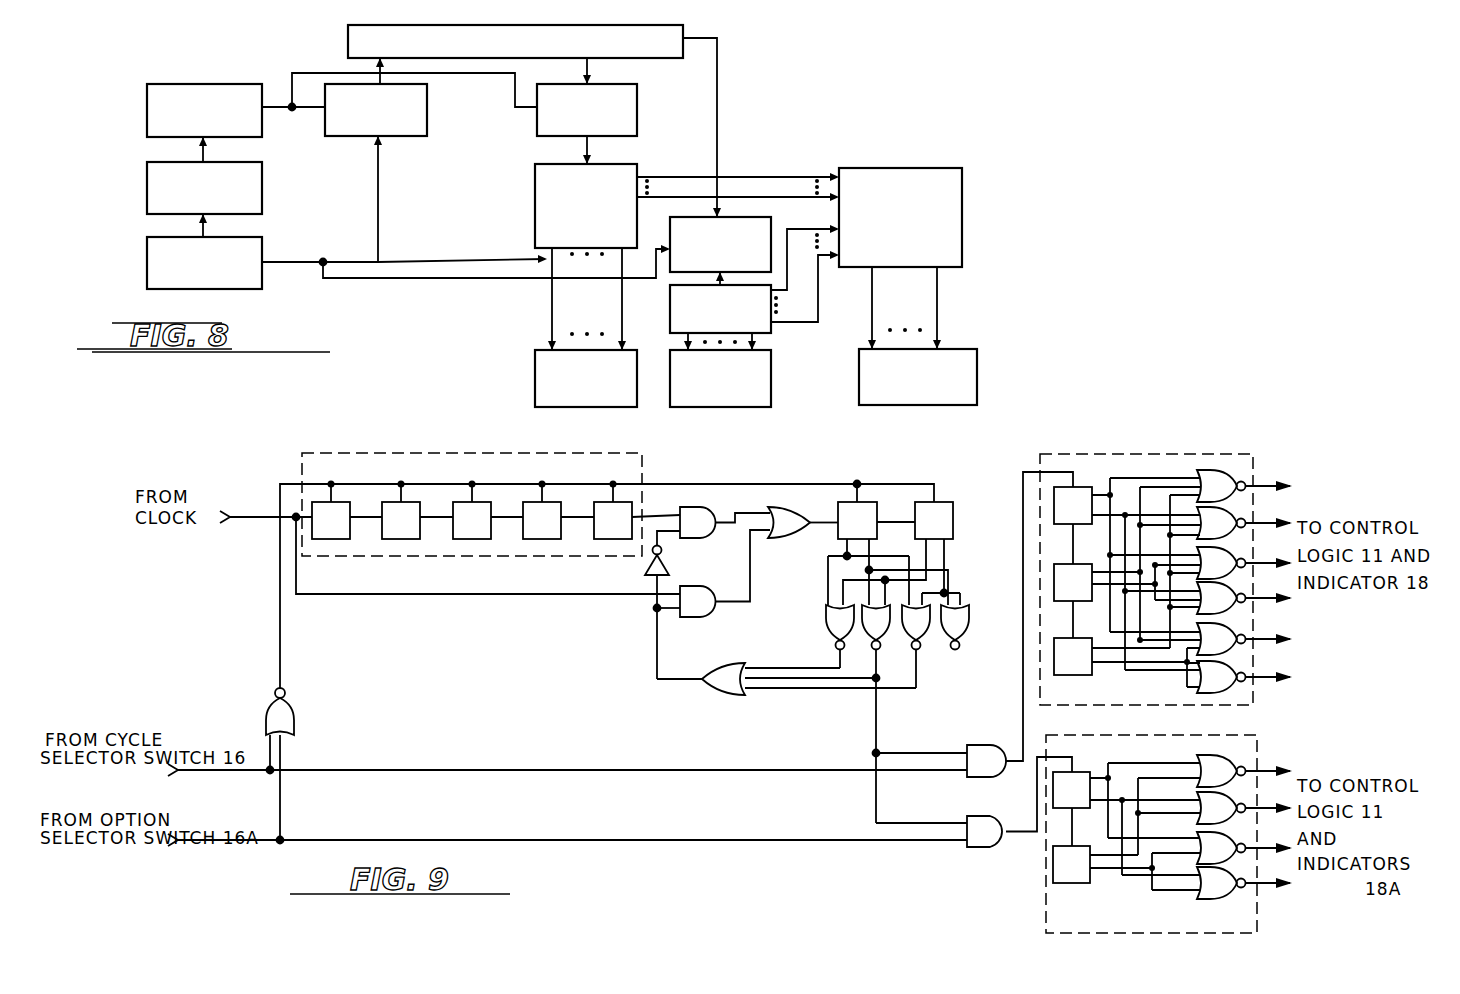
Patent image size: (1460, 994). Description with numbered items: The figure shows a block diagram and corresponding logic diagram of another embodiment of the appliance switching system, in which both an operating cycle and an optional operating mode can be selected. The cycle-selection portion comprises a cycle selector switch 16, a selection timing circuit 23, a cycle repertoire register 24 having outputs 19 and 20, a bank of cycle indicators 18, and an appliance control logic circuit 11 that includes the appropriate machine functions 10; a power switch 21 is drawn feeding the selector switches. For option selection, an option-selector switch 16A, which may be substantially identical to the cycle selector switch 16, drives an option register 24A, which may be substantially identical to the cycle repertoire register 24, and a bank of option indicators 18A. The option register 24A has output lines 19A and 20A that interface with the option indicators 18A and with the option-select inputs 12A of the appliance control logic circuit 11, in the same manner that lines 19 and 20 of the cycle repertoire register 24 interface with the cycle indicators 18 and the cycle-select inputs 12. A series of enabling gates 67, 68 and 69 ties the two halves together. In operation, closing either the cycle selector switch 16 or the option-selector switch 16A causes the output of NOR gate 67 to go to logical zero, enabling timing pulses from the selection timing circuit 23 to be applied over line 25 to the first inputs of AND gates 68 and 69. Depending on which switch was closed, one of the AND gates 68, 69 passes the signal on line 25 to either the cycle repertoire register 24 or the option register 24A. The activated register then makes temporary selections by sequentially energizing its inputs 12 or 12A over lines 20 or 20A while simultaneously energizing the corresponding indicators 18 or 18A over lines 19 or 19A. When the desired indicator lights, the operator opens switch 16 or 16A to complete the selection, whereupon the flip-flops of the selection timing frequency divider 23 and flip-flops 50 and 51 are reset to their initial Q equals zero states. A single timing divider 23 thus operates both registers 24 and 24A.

In FIG. 8, the machine functions 10 is at (925, 405).
In FIG. 8, the appliance control logic circuit 11 is at (910, 168).
In FIG. 8, the cycle-select inputs 12 is at (842, 185).
In FIG. 8, the option-select inputs 12A is at (826, 258).
In FIG. 8, the cycle selector switch 16 is at (170, 83).
In FIG. 8, the option-selector switch 16A is at (147, 267).
In FIG. 8, the cycle indicators 18 is at (535, 378).
In FIG. 8, the option indicators 18A is at (733, 407).
In FIG. 8, the cycle repertoire register output lines 19 is at (535, 260).
In FIG. 8, the option register output lines 19A is at (683, 340).
In FIG. 8, the cycle repertoire register output lines 20 is at (688, 186).
In FIG. 8, the option register output lines 20A is at (799, 305).
In FIG. 8, the power switch 21 is at (147, 186).
In FIG. 8, the selection timing circuit 23 is at (683, 38).
In FIG. 9, the selection timing circuit 23 is at (490, 451).
In FIG. 8, the cycle repertoire register 24 is at (626, 163).
In FIG. 9, the cycle repertoire register 24 is at (1105, 455).
In FIG. 8, the option register 24A is at (670, 302).
In FIG. 9, the option register 24A is at (1257, 748).
In FIG. 9, the line 25 is at (878, 718).
In FIG. 9, the flip-flop 50 is at (863, 499).
In FIG. 9, the flip-flop 51 is at (948, 499).
In FIG. 8, the NOR gate 67 is at (427, 108).
In FIG. 9, the NOR gate 67 is at (295, 722).
In FIG. 8, the AND gate 68 is at (637, 96).
In FIG. 9, the AND gate 68 is at (1005, 712).
In FIG. 8, the AND gate 69 is at (771, 217).
In FIG. 9, the AND gate 69 is at (982, 847).